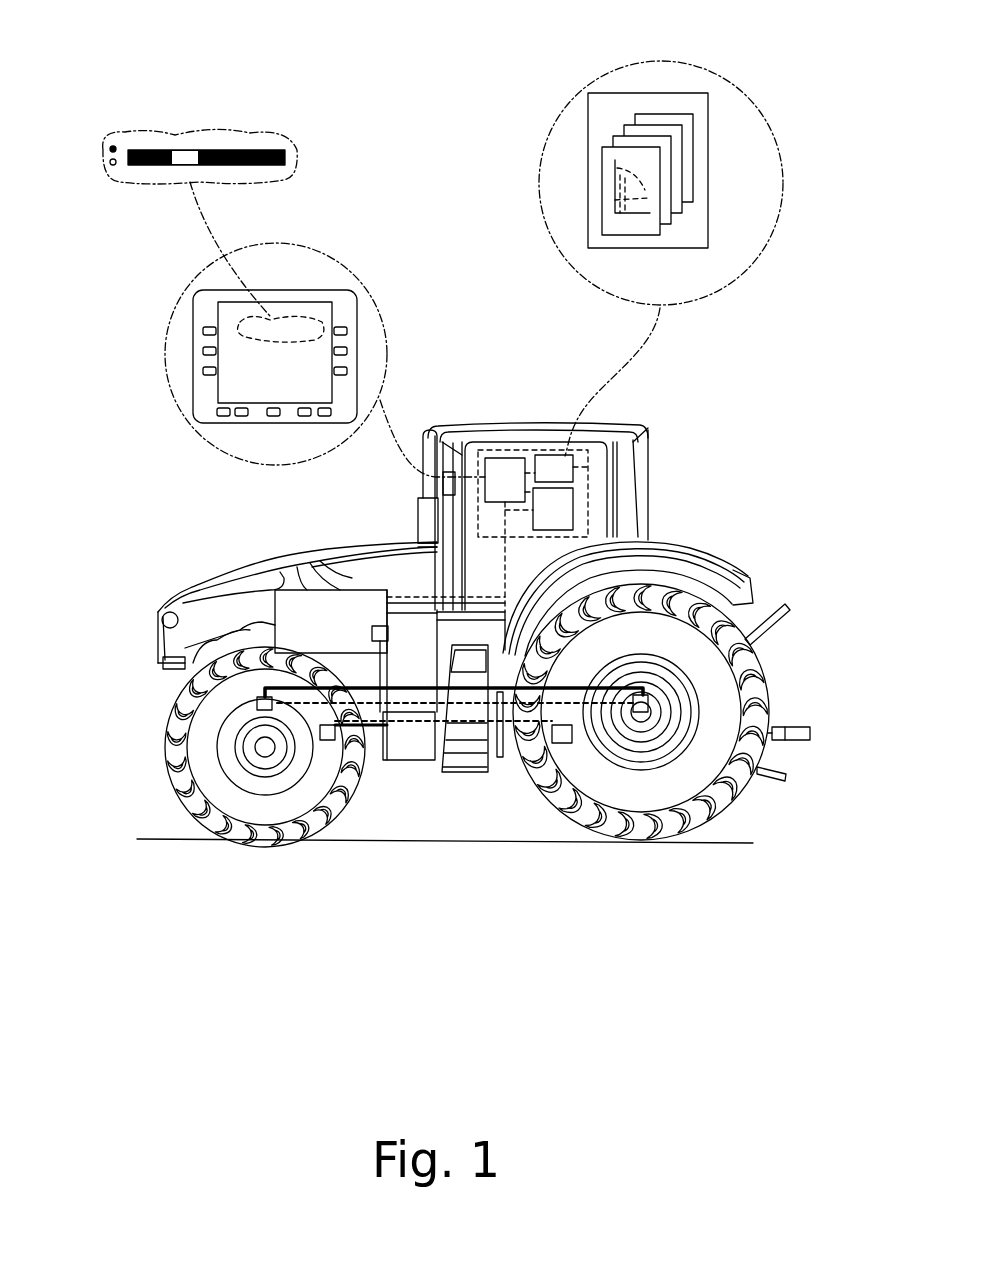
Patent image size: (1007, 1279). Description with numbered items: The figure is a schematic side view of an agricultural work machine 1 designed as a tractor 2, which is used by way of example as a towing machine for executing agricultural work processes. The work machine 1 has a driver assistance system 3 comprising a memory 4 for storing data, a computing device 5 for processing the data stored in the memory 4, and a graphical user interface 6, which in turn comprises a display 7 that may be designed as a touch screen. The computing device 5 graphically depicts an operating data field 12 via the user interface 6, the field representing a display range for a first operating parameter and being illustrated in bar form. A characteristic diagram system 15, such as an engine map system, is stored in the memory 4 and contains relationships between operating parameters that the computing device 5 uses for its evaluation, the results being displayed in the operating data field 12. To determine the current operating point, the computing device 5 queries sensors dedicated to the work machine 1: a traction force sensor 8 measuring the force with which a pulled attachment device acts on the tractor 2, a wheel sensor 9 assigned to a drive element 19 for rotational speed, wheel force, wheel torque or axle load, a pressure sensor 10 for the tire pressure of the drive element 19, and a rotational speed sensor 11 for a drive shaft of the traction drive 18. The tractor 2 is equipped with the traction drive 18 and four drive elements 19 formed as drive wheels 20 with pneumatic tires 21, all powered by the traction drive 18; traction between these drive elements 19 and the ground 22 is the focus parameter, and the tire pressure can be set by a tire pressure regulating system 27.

The agricultural work machine 1 is at (445, 557).
The tractor 2 is at (697, 479).
The driver assistance system 3 is at (453, 362).
The memory 4 is at (543, 455).
The computing device 5 is at (573, 517).
The graphical user interface 6 is at (500, 458).
The display 7 is at (300, 312).
The traction force sensor 8 is at (798, 725).
The wheel sensor 9 is at (255, 712).
The pressure sensor 10 is at (327, 742).
The rotational speed sensor 11 is at (380, 712).
The operating data field 12 is at (182, 150).
The characteristic diagram system 15 is at (700, 146).
The traction drive 18 is at (275, 597).
The drive element 19 is at (445, 756).
The drive wheel 20 is at (150, 777).
The pneumatic tire 21 is at (265, 840).
The ground 22 is at (475, 843).
The tire pressure regulating system 27 is at (405, 760).